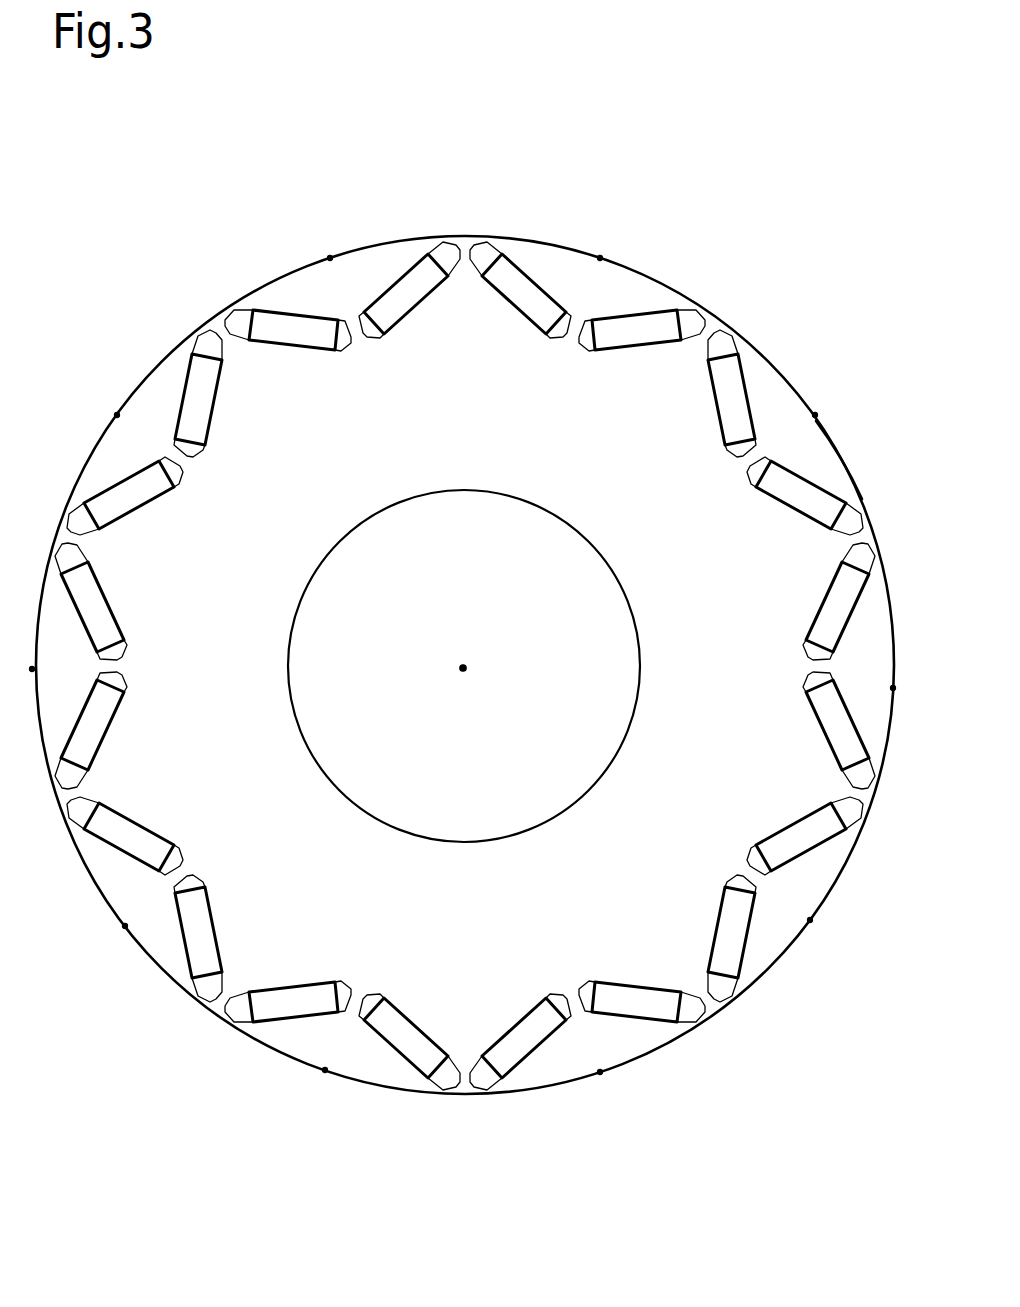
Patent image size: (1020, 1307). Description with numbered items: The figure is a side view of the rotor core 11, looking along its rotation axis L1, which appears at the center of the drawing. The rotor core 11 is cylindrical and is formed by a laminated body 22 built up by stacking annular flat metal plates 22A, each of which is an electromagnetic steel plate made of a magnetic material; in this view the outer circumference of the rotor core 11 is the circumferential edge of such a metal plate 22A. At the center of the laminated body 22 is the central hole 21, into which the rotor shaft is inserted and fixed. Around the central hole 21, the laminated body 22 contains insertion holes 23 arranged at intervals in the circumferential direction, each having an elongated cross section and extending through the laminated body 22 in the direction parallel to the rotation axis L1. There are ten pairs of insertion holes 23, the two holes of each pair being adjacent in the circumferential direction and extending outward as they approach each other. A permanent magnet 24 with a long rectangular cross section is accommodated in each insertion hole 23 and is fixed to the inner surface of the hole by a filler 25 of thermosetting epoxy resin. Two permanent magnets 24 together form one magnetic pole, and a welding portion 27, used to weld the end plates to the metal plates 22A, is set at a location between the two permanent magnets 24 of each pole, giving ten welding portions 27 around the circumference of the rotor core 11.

The rotor core 11 is at (742, 221).
The central hole 21 is at (499, 838).
The laminated body 22 is at (782, 352).
The metal plate 22A is at (830, 456).
The insertion hole 23 is at (207, 417).
The permanent magnet 24 is at (218, 387).
The filler 25 is at (200, 347).
The welding portion 27 is at (330, 256).
The rotation axis L1 is at (468, 668).